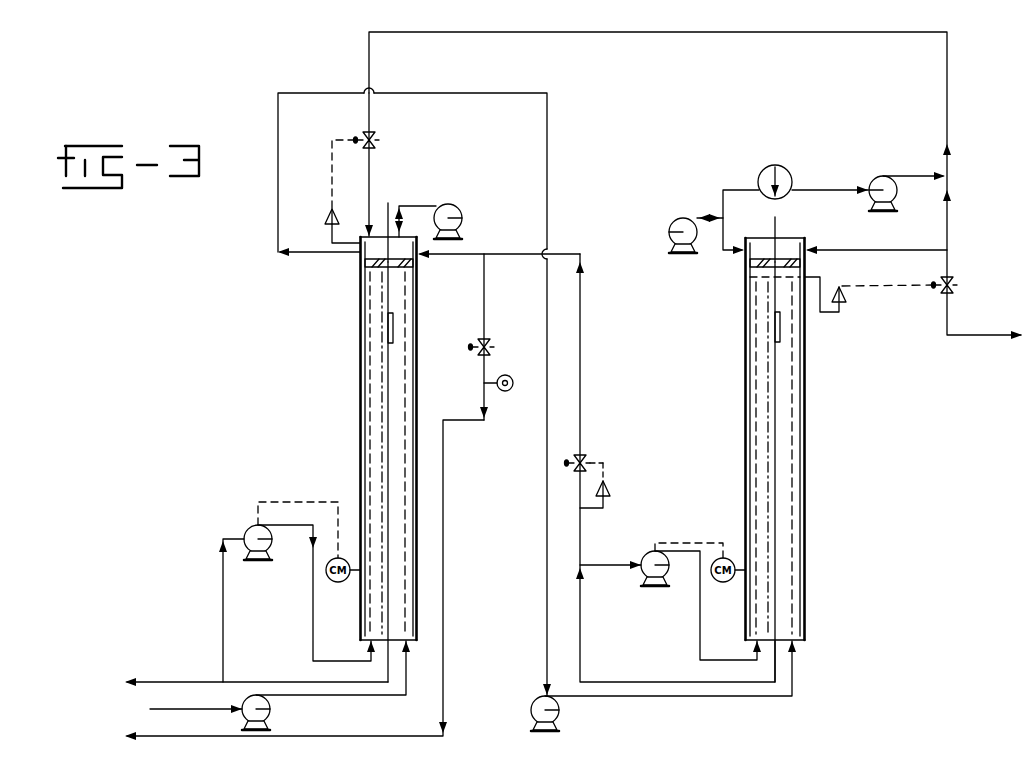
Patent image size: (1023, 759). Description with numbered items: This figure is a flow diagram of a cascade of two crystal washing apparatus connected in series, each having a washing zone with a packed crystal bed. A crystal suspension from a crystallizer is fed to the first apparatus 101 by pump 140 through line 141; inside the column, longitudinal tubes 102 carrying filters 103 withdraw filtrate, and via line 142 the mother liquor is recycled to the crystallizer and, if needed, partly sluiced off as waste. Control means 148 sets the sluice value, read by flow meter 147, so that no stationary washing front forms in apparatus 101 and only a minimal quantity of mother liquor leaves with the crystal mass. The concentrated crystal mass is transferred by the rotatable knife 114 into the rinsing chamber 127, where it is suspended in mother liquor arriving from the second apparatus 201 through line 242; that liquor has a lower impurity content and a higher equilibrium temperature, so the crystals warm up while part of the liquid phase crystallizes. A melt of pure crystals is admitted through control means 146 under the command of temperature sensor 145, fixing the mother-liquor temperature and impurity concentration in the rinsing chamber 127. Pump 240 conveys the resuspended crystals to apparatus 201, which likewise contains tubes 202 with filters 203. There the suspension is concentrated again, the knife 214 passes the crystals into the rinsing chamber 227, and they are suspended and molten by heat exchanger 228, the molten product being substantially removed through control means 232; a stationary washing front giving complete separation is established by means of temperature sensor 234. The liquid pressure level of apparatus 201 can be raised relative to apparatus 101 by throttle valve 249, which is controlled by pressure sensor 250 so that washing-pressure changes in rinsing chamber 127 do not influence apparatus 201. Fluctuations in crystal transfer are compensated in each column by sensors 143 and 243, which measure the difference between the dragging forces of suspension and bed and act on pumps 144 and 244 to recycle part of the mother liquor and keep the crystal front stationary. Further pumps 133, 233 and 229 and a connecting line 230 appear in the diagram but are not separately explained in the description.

The first apparatus 101 is at (359, 375).
The tube 102 is at (386, 420).
The filter 103 is at (388, 325).
The rotatable knife 114 is at (364, 266).
The rinsing chamber 127 is at (383, 244).
The first pump 133 is at (462, 218).
The pump 140 is at (270, 709).
The line 141 is at (335, 681).
The line 142 is at (160, 682).
The sensor 143 is at (338, 582).
The pump 144 is at (297, 603).
The temperature sensor 145 is at (325, 218).
The control means 146 is at (376, 140).
The flow meter 147 is at (505, 391).
The control means 148 is at (492, 347).
The second apparatus 201 is at (744, 375).
The tube 202 is at (773, 420).
The filter 203 is at (775, 325).
The knife 214 is at (749, 266).
The rinsing chamber 227 is at (784, 250).
The heat exchanger 228 is at (784, 174).
The second pump 229 is at (883, 177).
The return line 230 is at (724, 208).
The control means 232 is at (955, 285).
The third pump 233 is at (680, 220).
The temperature sensor 234 is at (838, 305).
The pump 240 is at (559, 710).
The line 242 is at (582, 345).
The sensor 243 is at (723, 582).
The pump 244 is at (670, 605).
The throttle valve 249 is at (585, 460).
The pressure sensor 250 is at (610, 490).